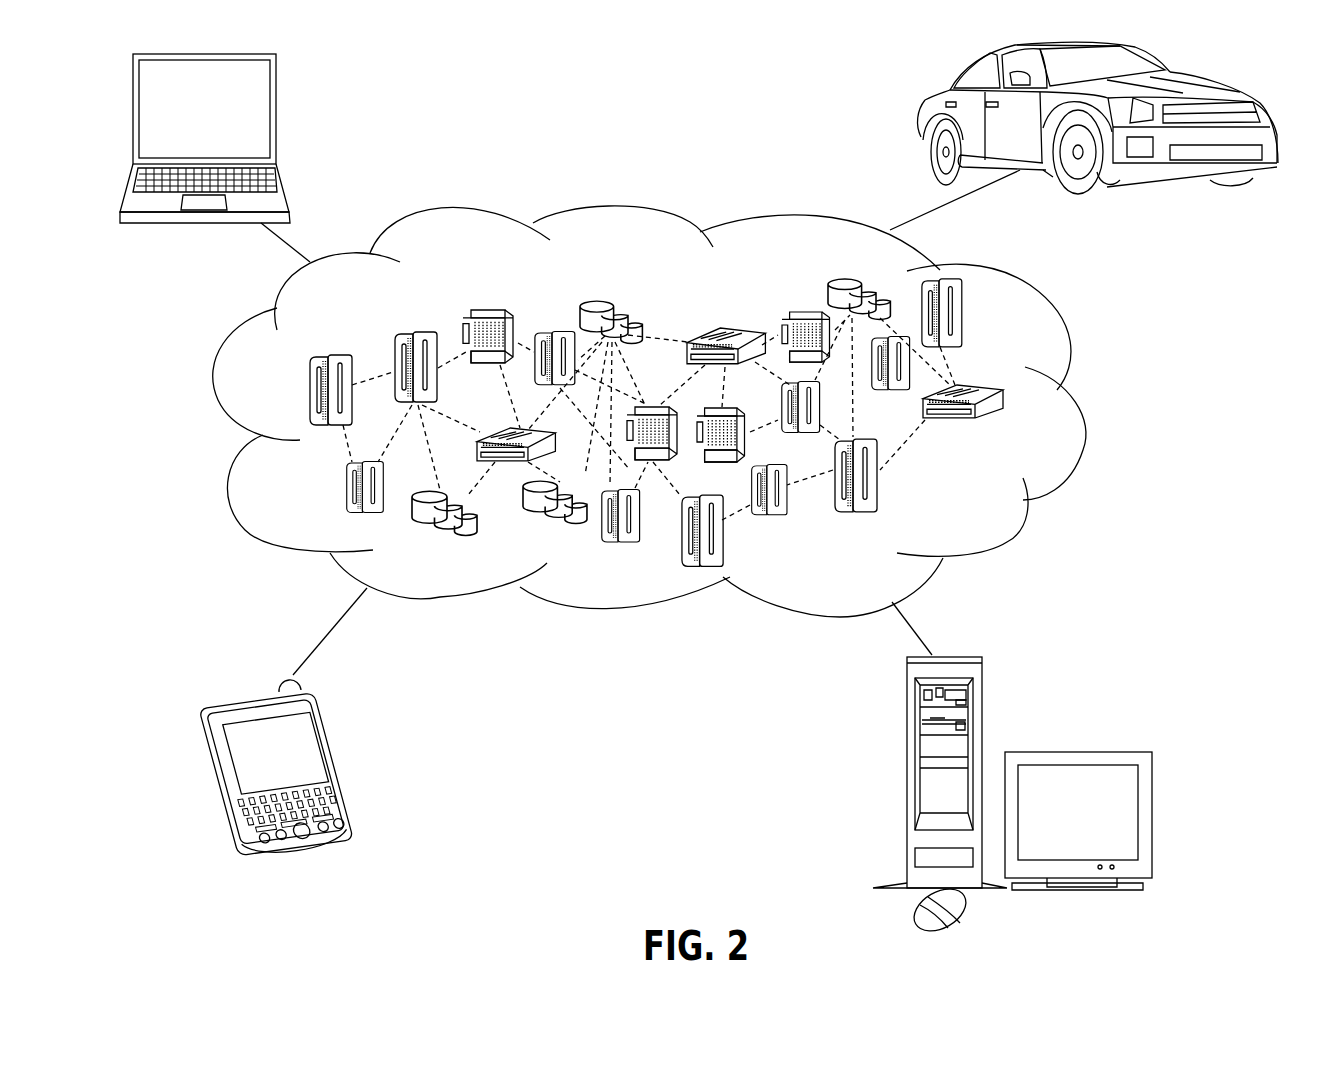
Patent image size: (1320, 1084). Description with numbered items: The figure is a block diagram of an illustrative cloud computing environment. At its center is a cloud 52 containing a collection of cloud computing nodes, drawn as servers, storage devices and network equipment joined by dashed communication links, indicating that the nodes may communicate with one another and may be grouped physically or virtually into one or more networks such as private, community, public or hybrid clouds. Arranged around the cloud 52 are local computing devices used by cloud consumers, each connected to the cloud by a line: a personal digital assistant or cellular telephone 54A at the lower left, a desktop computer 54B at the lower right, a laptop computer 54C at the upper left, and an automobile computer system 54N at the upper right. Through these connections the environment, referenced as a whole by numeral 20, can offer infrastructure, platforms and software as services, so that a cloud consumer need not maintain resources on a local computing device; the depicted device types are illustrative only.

The system 20 is at (699, 490).
The network 52 is at (1073, 403).
The personal digital assistant (PDA) or cellular telephone 54A is at (330, 733).
The desktop computer 54B is at (905, 717).
The laptop computer 54C is at (277, 92).
The automobile computer system 54N is at (925, 102).